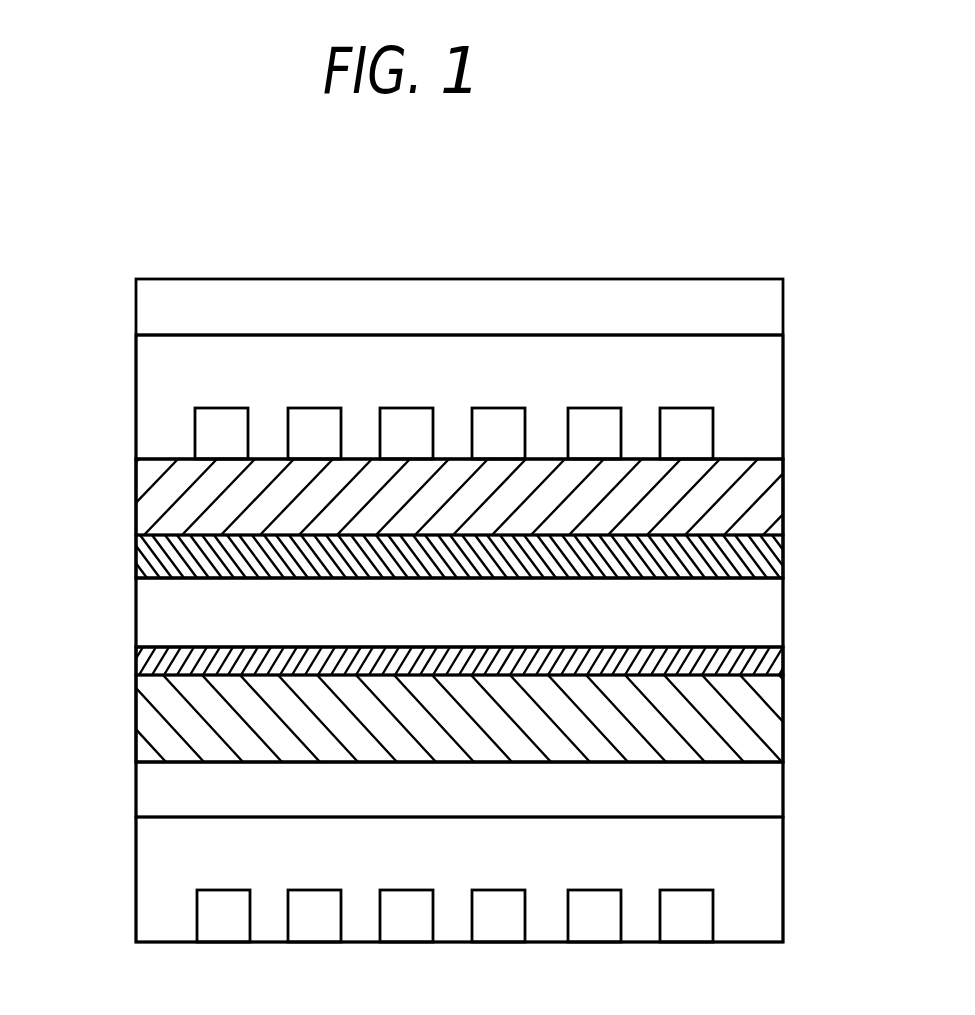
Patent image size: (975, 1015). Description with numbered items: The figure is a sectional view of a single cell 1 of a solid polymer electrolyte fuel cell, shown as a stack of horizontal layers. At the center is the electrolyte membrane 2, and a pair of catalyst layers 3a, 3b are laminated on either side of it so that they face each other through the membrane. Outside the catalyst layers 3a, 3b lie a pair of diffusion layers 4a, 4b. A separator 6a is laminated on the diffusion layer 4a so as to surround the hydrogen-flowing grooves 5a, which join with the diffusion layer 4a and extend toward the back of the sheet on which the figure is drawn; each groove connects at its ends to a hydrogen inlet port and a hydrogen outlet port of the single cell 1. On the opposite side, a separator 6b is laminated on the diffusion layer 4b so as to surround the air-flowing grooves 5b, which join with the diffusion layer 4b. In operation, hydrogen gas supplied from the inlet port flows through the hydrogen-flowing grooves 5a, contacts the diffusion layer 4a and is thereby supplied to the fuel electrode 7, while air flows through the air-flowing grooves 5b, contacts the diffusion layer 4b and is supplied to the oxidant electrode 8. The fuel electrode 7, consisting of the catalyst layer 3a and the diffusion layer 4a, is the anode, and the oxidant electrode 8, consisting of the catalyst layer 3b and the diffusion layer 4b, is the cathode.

The single cell 1 is at (102, 337).
The electrolyte membrane 2 is at (783, 614).
The catalyst layer 3a is at (783, 556).
The catalyst layer 3b is at (783, 660).
The diffusion layer 4a is at (783, 497).
The diffusion layer 4b is at (783, 724).
The hydrogen-flowing grooves 5a is at (713, 432).
The air-flowing grooves 5b is at (783, 790).
The separator 6a is at (783, 382).
The separator 6b is at (783, 870).
The fuel electrode 7 is at (858, 487).
The oxidant electrode 8 is at (858, 645).